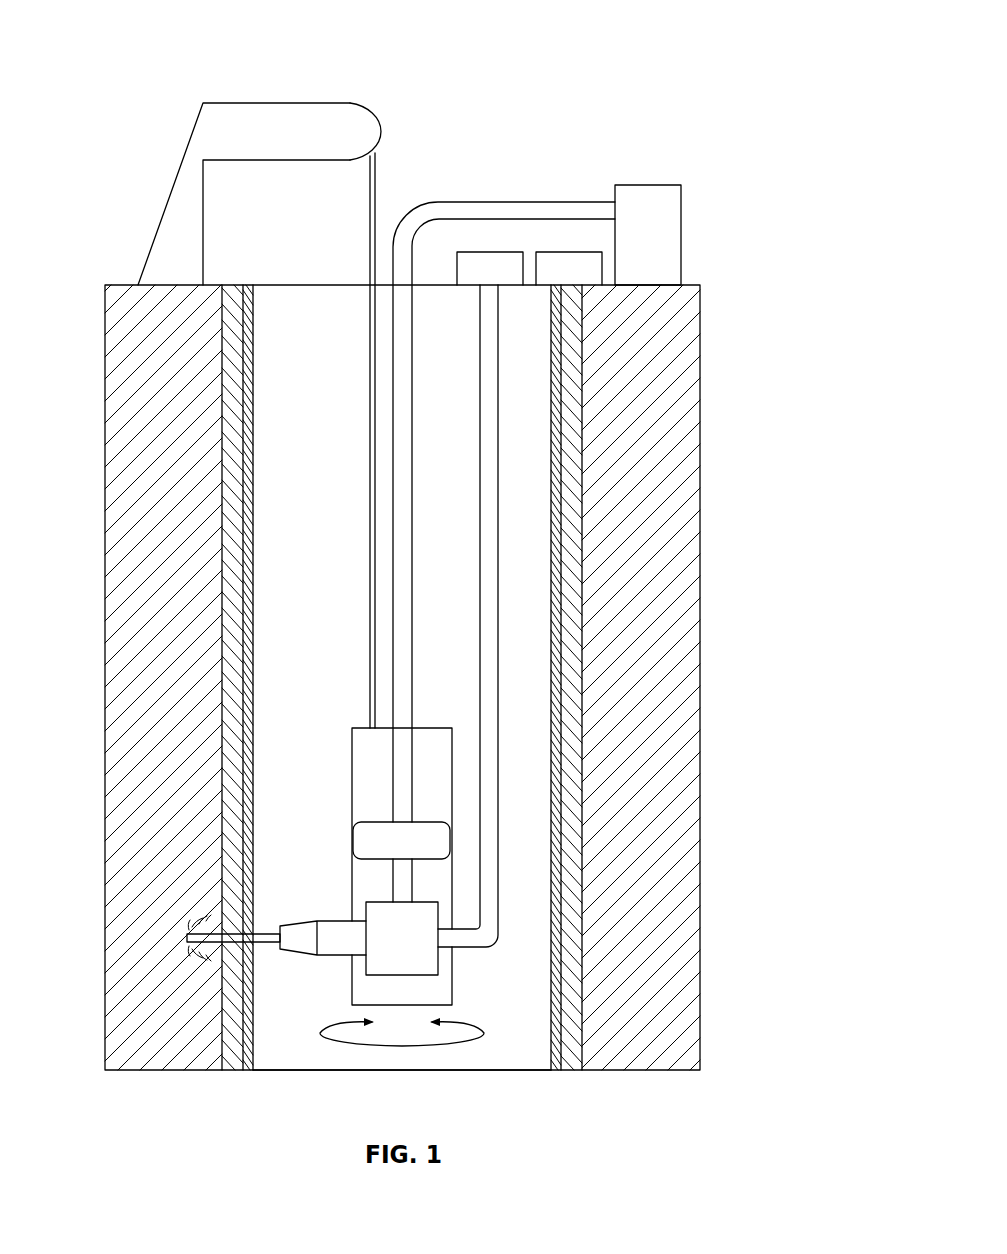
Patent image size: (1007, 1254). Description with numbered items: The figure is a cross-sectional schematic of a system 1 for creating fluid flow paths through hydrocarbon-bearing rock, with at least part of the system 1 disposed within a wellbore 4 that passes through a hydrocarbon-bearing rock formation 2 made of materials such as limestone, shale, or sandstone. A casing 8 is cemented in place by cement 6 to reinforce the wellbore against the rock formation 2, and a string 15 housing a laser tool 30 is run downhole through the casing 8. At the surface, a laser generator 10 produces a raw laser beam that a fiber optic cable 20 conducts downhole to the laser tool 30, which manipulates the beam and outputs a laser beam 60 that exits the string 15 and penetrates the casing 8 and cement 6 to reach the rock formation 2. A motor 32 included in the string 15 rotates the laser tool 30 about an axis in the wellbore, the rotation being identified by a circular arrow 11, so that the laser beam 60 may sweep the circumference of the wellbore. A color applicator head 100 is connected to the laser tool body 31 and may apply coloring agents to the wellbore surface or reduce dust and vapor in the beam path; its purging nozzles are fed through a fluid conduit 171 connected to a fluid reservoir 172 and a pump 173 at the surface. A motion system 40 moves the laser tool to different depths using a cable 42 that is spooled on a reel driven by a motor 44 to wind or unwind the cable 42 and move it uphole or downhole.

The system 1 is at (603, 38).
The hydrocarbon-bearing rock formation 2 is at (687, 403).
The wellbore 4 is at (302, 302).
The cement 6 is at (570, 523).
The casing 8 is at (555, 652).
The laser generator 10 is at (681, 235).
The circular arrow 11 is at (483, 1033).
The string 15 is at (442, 775).
The fiber optic cable 20 is at (412, 517).
The laser tool 30 is at (430, 957).
The laser tool body 31 is at (367, 962).
The motor 32 is at (442, 838).
The motion system 40 is at (163, 120).
The cable 42 is at (375, 173).
The motor 44 is at (370, 127).
The laser beam 60 is at (260, 941).
The color applicator head 100 is at (298, 928).
The fluid conduit 171 is at (498, 517).
The fluid reservoir 172 is at (547, 252).
The pump 173 is at (472, 252).